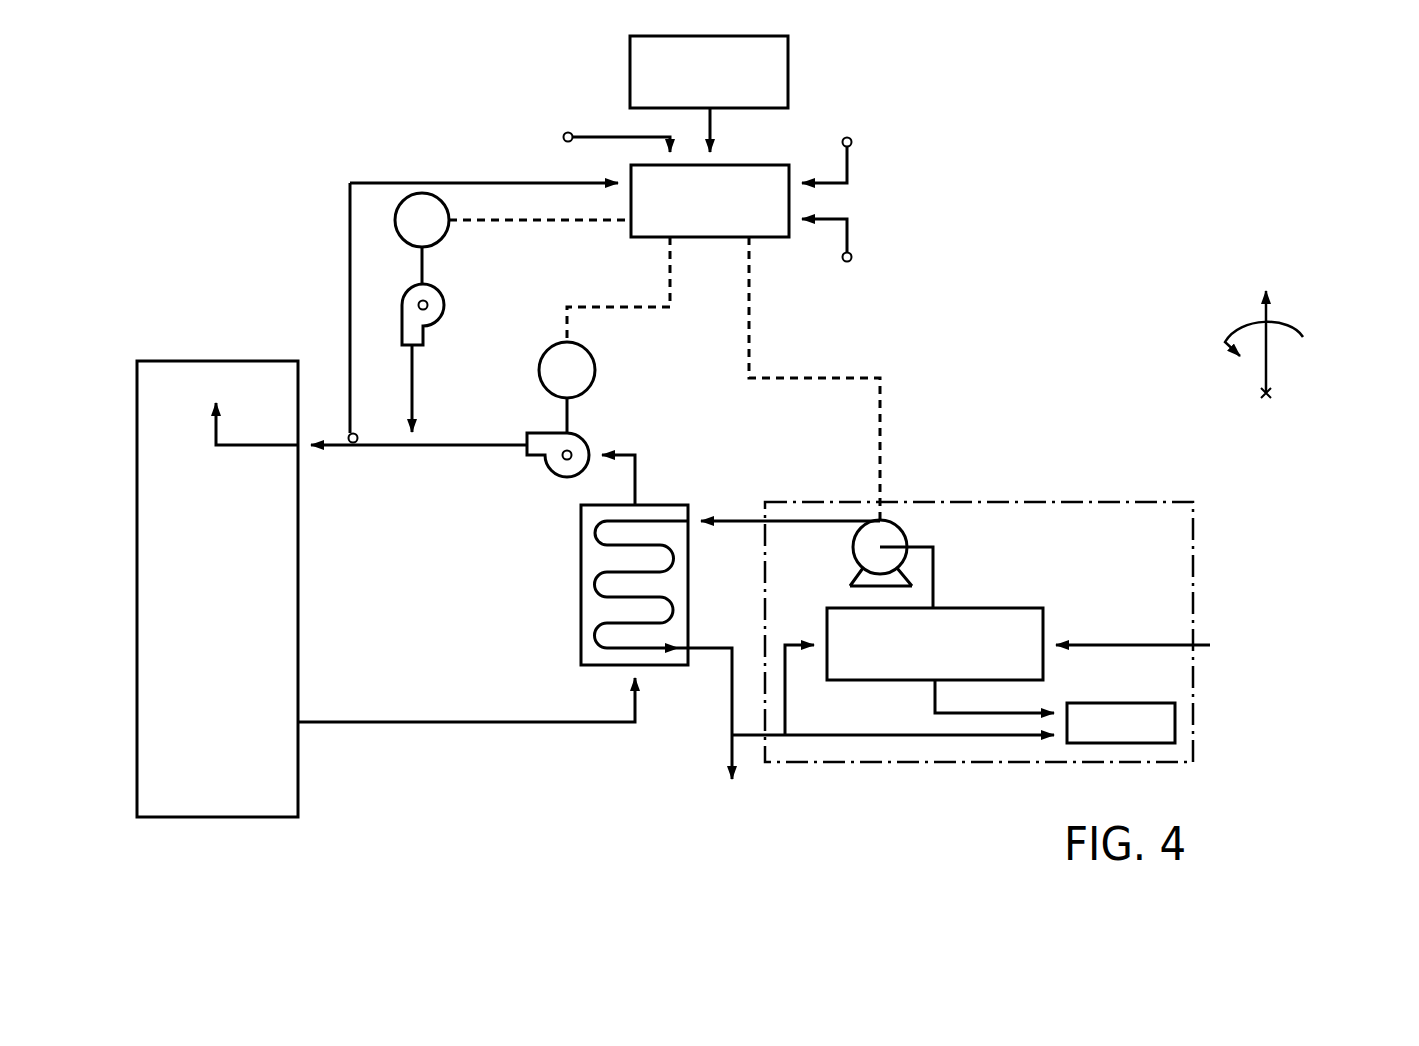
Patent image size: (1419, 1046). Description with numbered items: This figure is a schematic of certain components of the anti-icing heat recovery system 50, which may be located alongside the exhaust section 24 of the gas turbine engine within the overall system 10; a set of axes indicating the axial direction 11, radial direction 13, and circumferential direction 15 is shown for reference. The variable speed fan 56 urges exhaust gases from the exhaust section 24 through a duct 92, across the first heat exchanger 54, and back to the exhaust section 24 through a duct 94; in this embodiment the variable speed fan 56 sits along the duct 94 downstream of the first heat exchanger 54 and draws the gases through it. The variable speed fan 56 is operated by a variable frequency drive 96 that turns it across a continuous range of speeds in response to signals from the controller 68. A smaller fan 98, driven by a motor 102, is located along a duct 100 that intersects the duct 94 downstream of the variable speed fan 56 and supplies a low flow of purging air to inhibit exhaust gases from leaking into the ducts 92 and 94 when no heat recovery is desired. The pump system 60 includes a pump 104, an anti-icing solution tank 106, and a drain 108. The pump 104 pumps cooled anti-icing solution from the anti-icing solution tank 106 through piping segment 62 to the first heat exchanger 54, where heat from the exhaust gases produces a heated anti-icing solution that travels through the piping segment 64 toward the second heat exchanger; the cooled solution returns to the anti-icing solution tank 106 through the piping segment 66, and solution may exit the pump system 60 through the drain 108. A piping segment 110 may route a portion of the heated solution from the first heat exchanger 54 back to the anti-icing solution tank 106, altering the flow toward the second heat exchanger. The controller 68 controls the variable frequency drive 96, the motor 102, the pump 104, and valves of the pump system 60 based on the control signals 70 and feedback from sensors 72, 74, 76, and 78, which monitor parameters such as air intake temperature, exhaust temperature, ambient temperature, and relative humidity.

The system 10 is at (170, 125).
The axial direction 11 is at (1266, 397).
The radial direction 13 is at (1270, 345).
The circumferential direction 15 is at (1245, 325).
The exhaust section 24 is at (217, 589).
The anti-icing heat recovery system 50 is at (966, 294).
The first heat exchanger 54 is at (581, 587).
The variable speed fan 56 is at (535, 455).
The pump system 60 is at (975, 501).
The piping segment 62 is at (737, 518).
The piping segment 64 is at (732, 760).
The piping segment 66 is at (1194, 642).
The controller 68 is at (713, 238).
The control signals 70 is at (790, 70).
The sensor 72 is at (563, 134).
The sensor 74 is at (348, 438).
The sensor 76 is at (851, 139).
The sensor 78 is at (850, 262).
The duct 92 is at (462, 723).
The duct 94 is at (381, 448).
The variable frequency drive 96 is at (548, 352).
The fan 98 is at (402, 305).
The duct 100 is at (415, 388).
The motor 102 is at (402, 200).
The pump 104 is at (850, 548).
The anti-icing solution tank 106 is at (988, 607).
The drain 108 is at (1120, 703).
The piping segment 110 is at (895, 737).